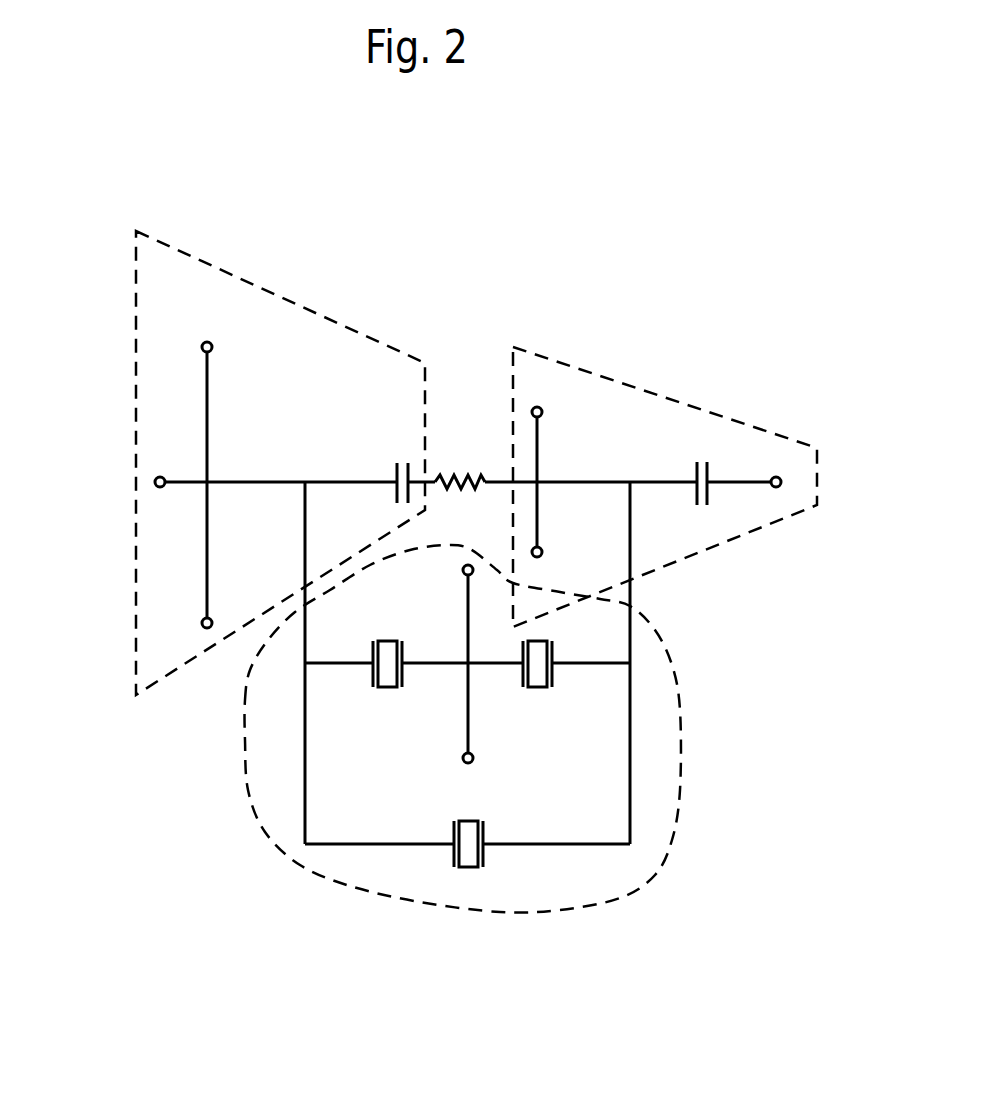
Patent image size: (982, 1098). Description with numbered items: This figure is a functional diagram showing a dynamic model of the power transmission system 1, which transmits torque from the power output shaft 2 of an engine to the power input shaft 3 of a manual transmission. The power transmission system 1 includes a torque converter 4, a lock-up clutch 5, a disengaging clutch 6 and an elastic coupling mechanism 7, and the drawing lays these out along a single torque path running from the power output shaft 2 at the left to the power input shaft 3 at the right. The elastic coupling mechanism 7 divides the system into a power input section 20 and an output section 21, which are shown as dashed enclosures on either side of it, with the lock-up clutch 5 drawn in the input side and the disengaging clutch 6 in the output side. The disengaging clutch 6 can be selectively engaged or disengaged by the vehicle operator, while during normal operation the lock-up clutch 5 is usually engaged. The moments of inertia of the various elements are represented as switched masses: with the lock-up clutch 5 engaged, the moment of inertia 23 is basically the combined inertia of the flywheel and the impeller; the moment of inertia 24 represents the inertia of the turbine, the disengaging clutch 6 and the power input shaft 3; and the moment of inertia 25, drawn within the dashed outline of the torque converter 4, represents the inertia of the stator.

The power transmission system 1 is at (762, 322).
The power output shaft 2 is at (154, 482).
The power input shaft 3 is at (783, 485).
The torque converter 4 is at (680, 787).
The lock-up clutch 5 is at (389, 461).
The disengaging clutch 6 is at (683, 451).
The elastic coupling mechanism 7 is at (463, 457).
The power input section 20 is at (265, 292).
The output section 21 is at (565, 362).
The moment of inertia 23 is at (207, 410).
The moment of inertia 24 is at (540, 508).
The moment of inertia 25 is at (468, 720).